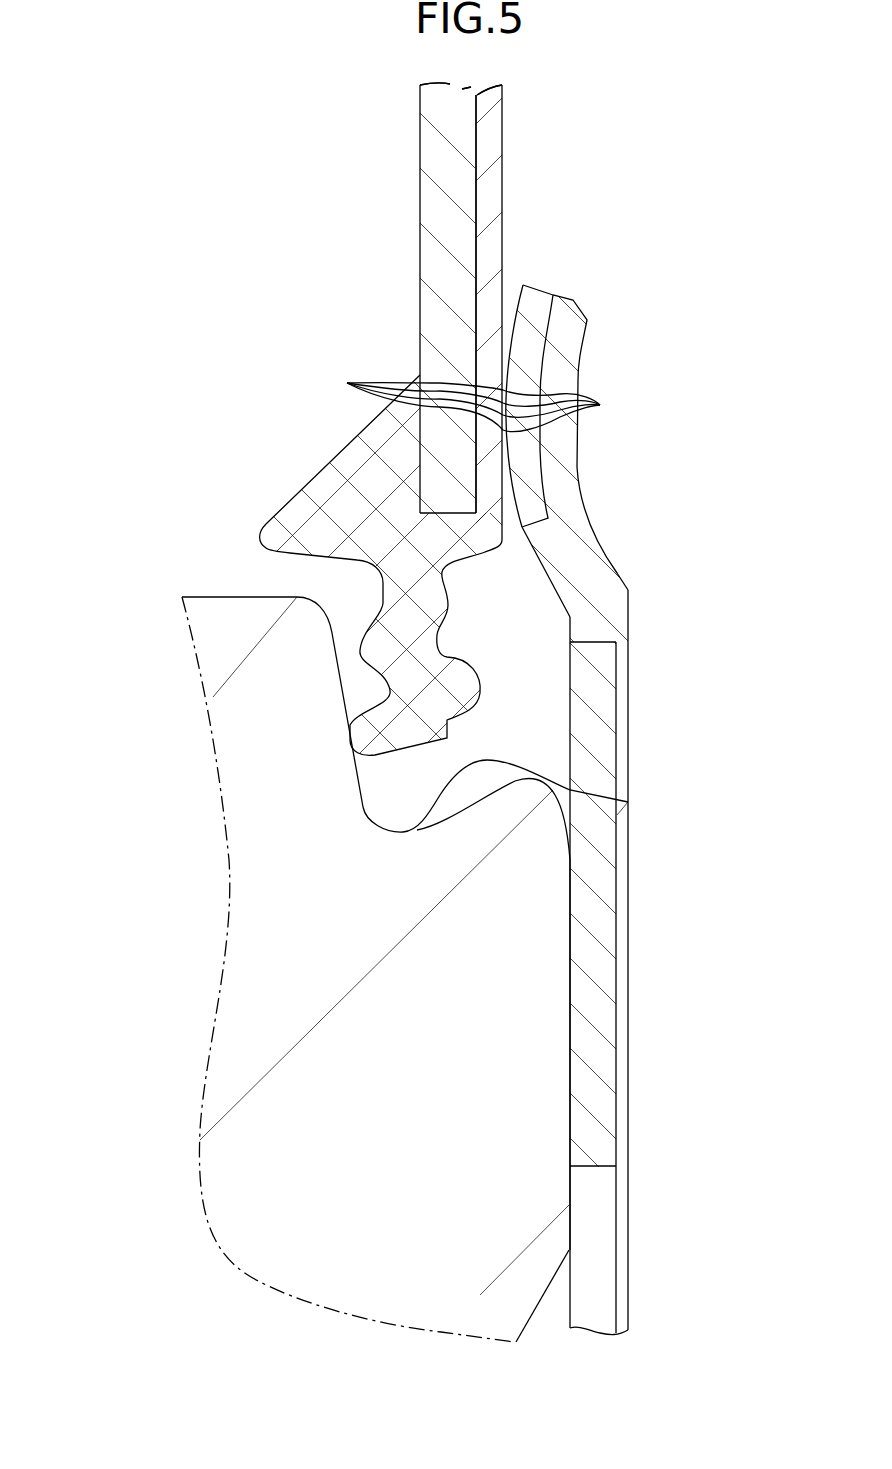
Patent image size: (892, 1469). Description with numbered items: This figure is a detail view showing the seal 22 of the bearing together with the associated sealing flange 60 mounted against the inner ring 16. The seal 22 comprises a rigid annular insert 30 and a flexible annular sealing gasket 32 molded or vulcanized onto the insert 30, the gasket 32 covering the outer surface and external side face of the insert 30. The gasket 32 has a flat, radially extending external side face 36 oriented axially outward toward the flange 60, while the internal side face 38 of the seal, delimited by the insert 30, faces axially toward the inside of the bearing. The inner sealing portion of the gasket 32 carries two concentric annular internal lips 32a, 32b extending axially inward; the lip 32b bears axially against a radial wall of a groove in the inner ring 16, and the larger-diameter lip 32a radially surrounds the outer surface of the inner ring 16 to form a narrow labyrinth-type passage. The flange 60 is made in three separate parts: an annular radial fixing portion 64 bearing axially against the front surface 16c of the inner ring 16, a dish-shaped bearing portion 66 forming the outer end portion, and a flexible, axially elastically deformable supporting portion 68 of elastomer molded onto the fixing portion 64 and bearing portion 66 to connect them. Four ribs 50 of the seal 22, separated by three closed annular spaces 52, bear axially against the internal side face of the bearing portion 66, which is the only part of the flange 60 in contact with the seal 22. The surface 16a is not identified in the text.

The seal 22 is at (527, 114).
The insert 30 is at (440, 198).
The sealing gasket 32 is at (446, 654).
The first internal lip 32a is at (300, 498).
The second internal lip 32b is at (370, 742).
The external side face 36 is at (505, 213).
The internal side face 38 is at (418, 300).
The ribs 50 is at (490, 407).
The closed annular spaces 52 is at (459, 388).
The bearing portion 66 is at (537, 300).
The supporting portion 68 is at (570, 562).
The flange 60 is at (446, 748).
The fixing portion 64 is at (592, 752).
The inner ring 16 is at (447, 969).
The cushion pad upper surface 16a is at (628, 802).
The front surface of inner ring 16c is at (571, 1004).